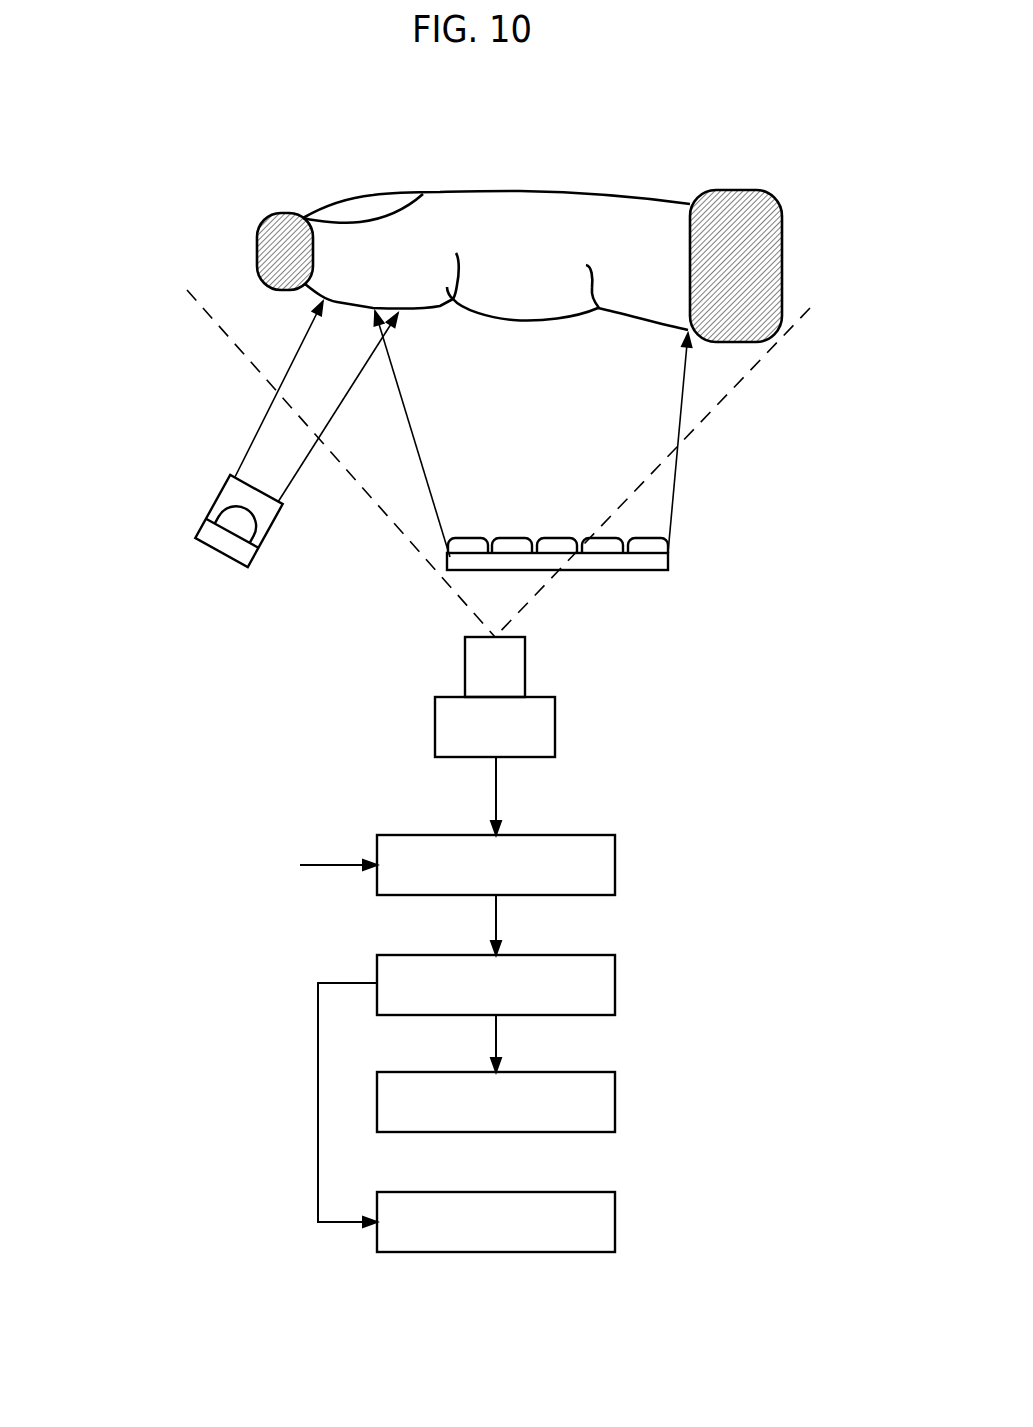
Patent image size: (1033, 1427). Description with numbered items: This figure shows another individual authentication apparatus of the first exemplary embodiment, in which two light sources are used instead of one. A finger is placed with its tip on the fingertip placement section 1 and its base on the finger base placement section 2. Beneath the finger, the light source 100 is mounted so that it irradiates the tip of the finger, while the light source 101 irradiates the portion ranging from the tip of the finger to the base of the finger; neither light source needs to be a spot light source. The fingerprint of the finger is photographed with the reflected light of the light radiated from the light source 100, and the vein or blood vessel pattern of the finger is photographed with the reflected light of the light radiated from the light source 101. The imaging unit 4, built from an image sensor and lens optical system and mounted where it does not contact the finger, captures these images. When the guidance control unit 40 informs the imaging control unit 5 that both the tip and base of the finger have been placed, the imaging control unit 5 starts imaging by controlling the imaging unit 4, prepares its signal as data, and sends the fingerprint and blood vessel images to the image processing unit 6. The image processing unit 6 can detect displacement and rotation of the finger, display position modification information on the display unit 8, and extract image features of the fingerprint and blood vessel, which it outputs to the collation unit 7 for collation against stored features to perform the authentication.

The fingertip placement section 1 is at (258, 240).
The finger base placement section 2 is at (736, 190).
The light source 100 is at (235, 475).
The light source 101 is at (670, 571).
The imaging unit 4 is at (556, 727).
The imaging control unit 5 is at (496, 865).
The image processing unit 6 is at (496, 985).
The collation unit 7 is at (496, 1102).
The display unit 8 is at (496, 1222).
The guidance control unit 40 is at (232, 864).